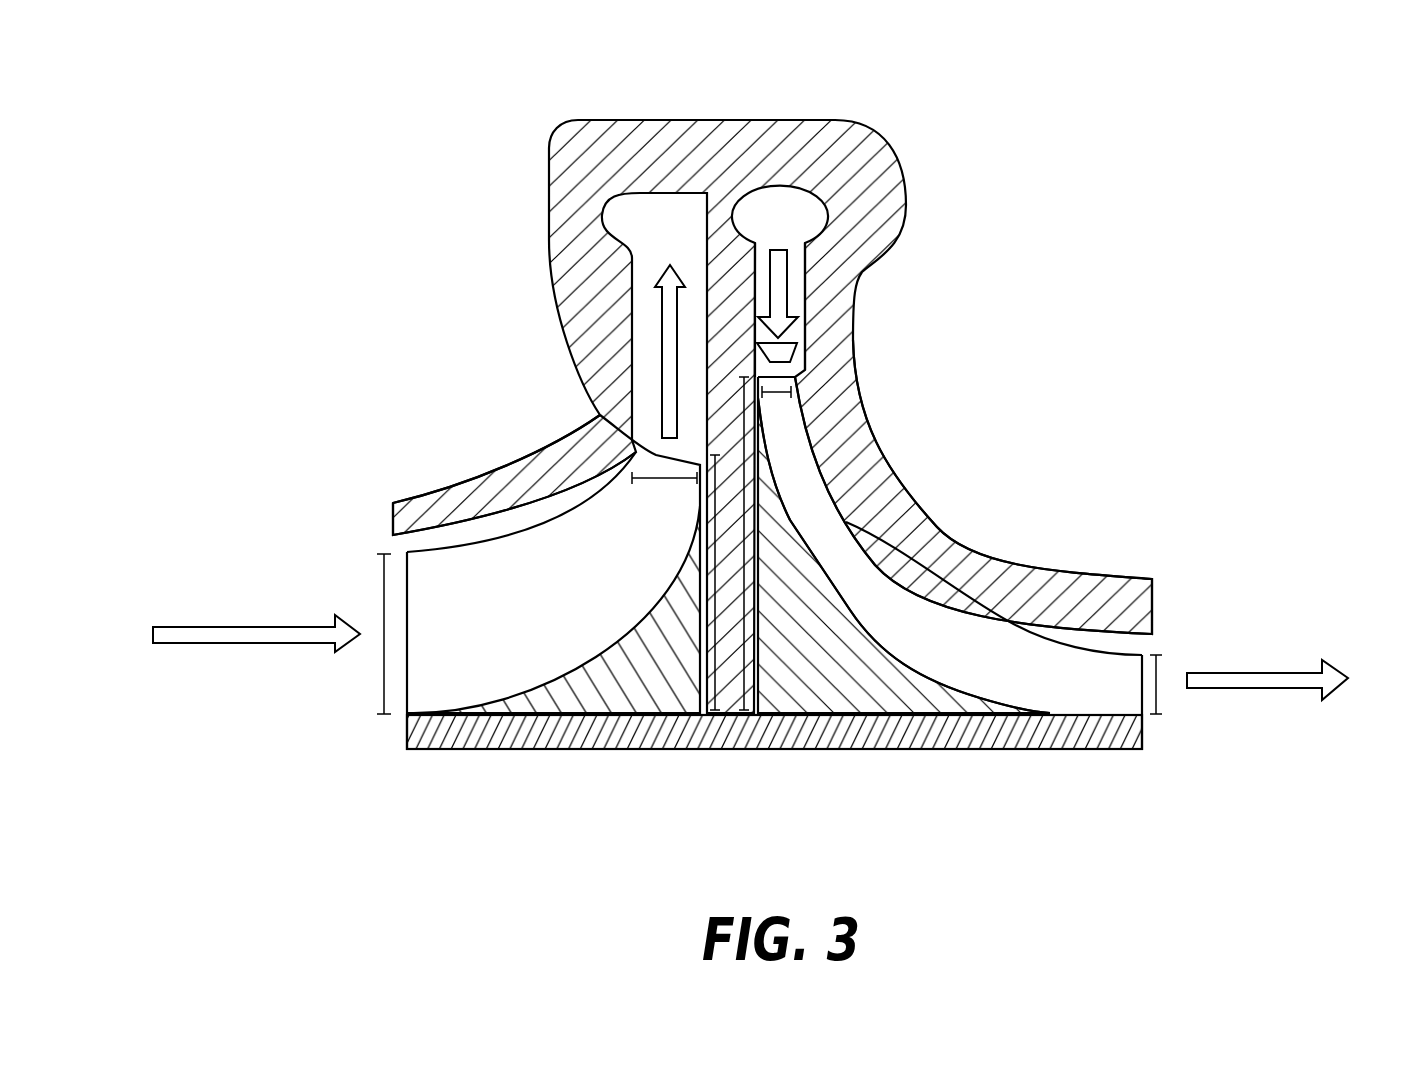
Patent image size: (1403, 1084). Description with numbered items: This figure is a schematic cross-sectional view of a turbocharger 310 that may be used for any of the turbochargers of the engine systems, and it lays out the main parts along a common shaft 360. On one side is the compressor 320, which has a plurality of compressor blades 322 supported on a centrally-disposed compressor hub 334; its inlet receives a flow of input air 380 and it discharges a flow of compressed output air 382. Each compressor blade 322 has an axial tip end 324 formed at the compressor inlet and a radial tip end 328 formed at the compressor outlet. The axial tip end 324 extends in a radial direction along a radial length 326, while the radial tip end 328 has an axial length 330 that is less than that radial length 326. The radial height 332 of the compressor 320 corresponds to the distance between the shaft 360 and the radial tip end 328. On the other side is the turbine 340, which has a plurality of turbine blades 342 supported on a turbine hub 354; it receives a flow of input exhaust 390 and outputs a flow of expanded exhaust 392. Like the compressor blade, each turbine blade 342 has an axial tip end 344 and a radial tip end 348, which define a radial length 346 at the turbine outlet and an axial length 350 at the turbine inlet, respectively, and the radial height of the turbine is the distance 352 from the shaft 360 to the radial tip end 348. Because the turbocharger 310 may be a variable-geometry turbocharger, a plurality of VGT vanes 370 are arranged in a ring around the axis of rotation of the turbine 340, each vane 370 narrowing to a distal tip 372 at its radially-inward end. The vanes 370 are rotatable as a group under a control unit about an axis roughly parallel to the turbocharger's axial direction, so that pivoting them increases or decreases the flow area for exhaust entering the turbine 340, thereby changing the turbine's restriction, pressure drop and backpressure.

The turbocharger 310 is at (428, 124).
The compressor 320 is at (570, 761).
The compressor blade 322 is at (477, 560).
The axial tip end 324 is at (405, 690).
The radial length 326 is at (385, 678).
The radial tip end 328 is at (650, 456).
The axial length 330 is at (633, 458).
The radial height 332 is at (712, 545).
The compressor hub 334 is at (668, 710).
The turbine 340 is at (907, 761).
The turbine blade 342 is at (812, 497).
The axial tip end 344 is at (1143, 693).
The radial length 346 is at (1160, 692).
The radial tip end 348 is at (793, 370).
The axial length 350 is at (790, 385).
The distance 352 is at (746, 608).
The turbine hub 354 is at (768, 712).
The shaft 360 is at (468, 747).
The VGT vane 370 is at (800, 340).
The distal tip 372 is at (790, 357).
The input air 380 is at (207, 633).
The compressed output air 382 is at (663, 293).
The input exhaust 390 is at (785, 275).
The expanded exhaust 392 is at (1287, 678).